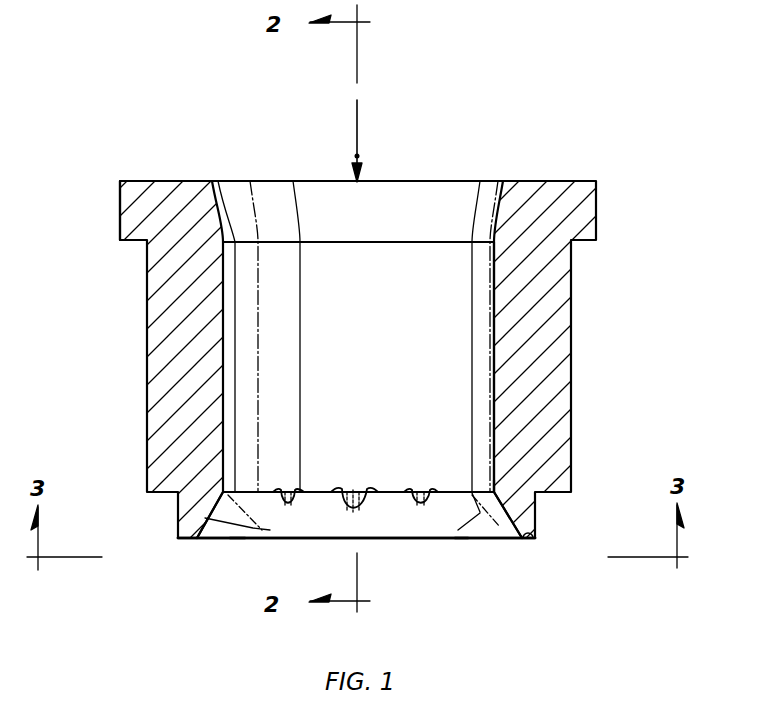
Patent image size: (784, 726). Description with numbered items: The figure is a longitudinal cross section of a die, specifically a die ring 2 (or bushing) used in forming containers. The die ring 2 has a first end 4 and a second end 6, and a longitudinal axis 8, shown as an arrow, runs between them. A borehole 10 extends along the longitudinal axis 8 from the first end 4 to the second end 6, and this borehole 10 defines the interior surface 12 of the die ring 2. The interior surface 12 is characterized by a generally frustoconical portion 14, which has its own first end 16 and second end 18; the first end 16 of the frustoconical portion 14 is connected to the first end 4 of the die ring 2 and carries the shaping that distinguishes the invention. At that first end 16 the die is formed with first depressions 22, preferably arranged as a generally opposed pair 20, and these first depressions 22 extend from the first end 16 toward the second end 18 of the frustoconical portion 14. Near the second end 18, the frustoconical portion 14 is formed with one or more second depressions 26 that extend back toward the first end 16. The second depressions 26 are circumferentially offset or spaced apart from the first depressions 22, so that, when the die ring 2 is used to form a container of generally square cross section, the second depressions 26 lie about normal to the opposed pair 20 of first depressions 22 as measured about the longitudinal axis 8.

The die ring 2 is at (572, 164).
The first end 4 is at (536, 540).
The second end 6 is at (120, 180).
The longitudinal axis 8 is at (358, 156).
The borehole 10 is at (446, 190).
The interior surface 12 is at (494, 305).
The generally frustoconical portion 14 is at (486, 515).
The first end of the generally frustoconical portion 16 is at (531, 528).
The second end of the generally frustoconical portion 18 is at (494, 492).
The generally opposed pair of first depressions 20 is at (238, 539).
The first depressions 22 is at (219, 541).
The second depressions 26 is at (288, 489).